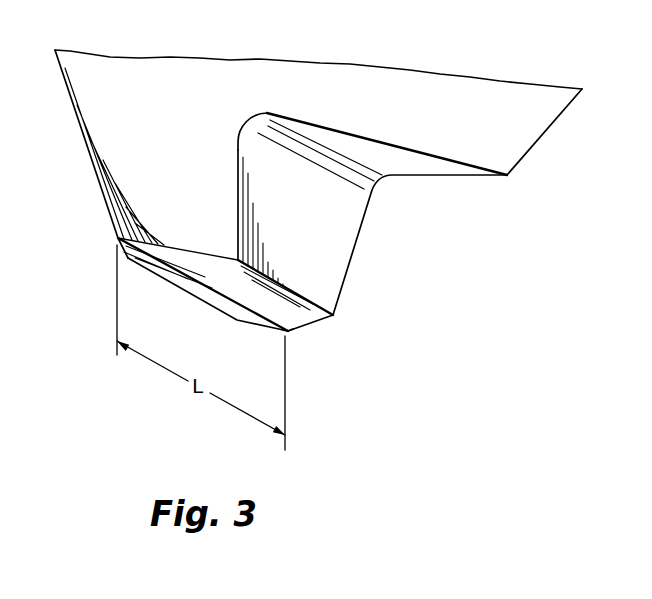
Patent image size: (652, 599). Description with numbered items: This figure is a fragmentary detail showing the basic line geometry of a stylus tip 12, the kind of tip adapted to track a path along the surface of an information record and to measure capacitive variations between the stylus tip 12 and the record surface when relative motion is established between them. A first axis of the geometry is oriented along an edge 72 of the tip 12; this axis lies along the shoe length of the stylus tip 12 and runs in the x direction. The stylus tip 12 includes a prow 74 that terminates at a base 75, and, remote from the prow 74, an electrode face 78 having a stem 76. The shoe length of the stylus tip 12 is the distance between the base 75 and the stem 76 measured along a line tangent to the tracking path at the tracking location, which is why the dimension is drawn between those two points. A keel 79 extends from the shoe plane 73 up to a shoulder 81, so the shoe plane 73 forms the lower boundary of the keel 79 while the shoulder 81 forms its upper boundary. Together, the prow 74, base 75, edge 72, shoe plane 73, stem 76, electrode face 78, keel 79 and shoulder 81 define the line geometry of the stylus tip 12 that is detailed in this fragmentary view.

The stylus tip 12 is at (383, 250).
The edge 72 is at (257, 316).
The shoe plane 73 is at (311, 319).
The prow 74 is at (101, 183).
The base 75 is at (118, 237).
The stem 76 is at (289, 333).
The electrode face 78 is at (343, 290).
The keel 79 is at (314, 234).
The shoulder 81 is at (282, 137).